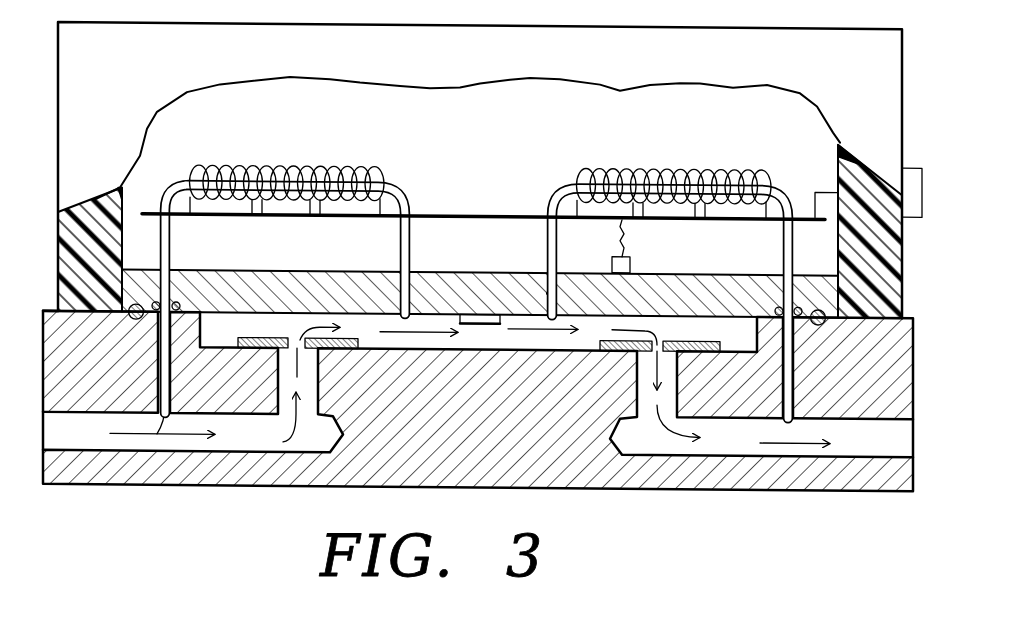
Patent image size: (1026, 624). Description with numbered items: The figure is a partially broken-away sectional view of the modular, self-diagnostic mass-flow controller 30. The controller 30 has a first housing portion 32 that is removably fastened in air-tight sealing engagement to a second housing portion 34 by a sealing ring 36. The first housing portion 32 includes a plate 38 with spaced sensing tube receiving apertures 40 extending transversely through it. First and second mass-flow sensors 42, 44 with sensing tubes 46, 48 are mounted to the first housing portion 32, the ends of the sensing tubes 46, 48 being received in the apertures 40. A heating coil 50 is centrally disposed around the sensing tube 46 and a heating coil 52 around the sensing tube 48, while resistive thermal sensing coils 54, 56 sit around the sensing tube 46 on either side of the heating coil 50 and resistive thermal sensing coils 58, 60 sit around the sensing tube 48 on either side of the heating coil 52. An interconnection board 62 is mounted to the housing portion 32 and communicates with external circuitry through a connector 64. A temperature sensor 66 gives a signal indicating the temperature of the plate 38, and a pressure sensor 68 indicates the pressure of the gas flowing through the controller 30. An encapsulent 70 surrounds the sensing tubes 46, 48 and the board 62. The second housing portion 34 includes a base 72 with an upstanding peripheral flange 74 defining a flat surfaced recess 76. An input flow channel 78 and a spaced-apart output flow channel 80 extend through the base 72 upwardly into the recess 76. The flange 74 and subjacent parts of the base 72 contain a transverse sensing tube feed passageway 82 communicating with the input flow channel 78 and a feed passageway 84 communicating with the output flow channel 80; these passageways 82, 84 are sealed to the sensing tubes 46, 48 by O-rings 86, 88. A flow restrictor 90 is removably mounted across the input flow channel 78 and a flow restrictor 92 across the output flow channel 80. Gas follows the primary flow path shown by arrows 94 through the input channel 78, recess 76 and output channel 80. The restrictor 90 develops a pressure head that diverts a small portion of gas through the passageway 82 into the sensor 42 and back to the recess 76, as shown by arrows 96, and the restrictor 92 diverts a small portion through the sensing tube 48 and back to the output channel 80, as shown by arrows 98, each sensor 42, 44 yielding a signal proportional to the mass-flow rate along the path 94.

The modular, self-diagnostic mass-flow controller 30 is at (43, 296).
The first housing portion 32 is at (857, 20).
The second housing portion 34 is at (918, 326).
The sealing ring 36 is at (818, 302).
The plate 38 is at (690, 278).
The sensing tube receiving apertures 40 is at (178, 262).
The first mass-flow sensor 42 is at (293, 160).
The second mass-flow sensor 44 is at (677, 169).
The sensing tube 46 is at (302, 285).
The sensing tube 48 is at (785, 183).
The heating coil 50 is at (285, 168).
The heating coil 52 is at (655, 166).
The resistive thermal sensing coil 54 is at (218, 166).
The resistive thermal sensing coil 56 is at (352, 168).
The resistive thermal sensing coil 58 is at (595, 166).
The resistive thermal sensing coil 60 is at (737, 170).
The interconnection board 62 is at (155, 215).
The connector 64 is at (913, 158).
The temperature sensor 66 is at (631, 260).
The pressure sensor 68 is at (490, 322).
The encapsulent 70 is at (78, 266).
The base 72 is at (450, 476).
The upstanding peripheral flange 74 is at (62, 369).
The flat surfaced recess 76 is at (550, 346).
The input flow channel 78 is at (67, 434).
The output flow channel 80 is at (880, 438).
The sensing tube feed passageway 82 is at (168, 338).
The sensing tube feed passageway 84 is at (779, 361).
The O-ring 86 is at (177, 299).
The O-ring 88 is at (779, 299).
The flow restrictor 90 is at (255, 336).
The flow restrictor 92 is at (697, 335).
The primary fluid-flow passageway arrows 94 is at (287, 430).
The arrows 96 is at (405, 328).
The arrows 98 is at (783, 422).